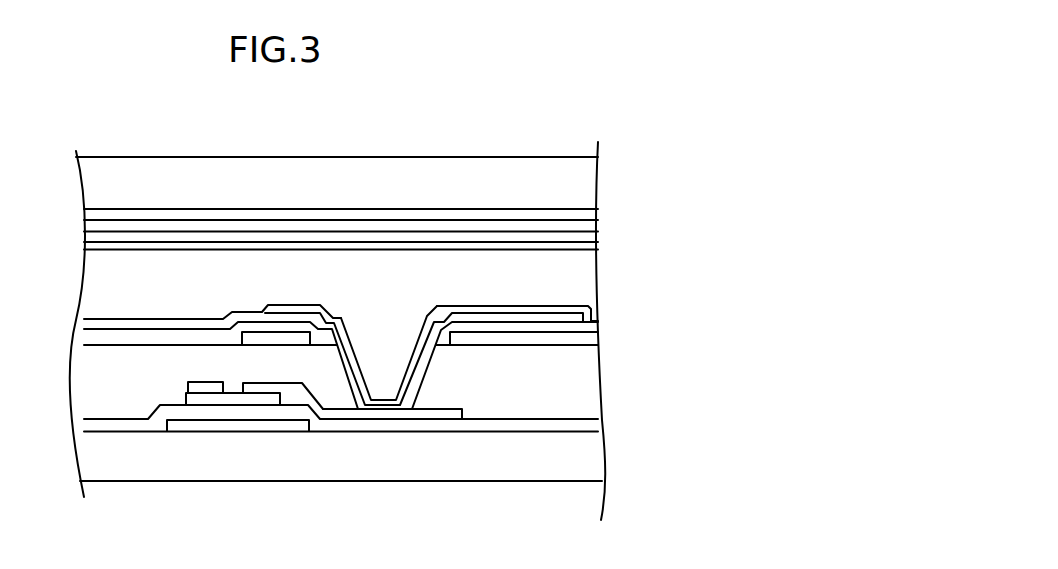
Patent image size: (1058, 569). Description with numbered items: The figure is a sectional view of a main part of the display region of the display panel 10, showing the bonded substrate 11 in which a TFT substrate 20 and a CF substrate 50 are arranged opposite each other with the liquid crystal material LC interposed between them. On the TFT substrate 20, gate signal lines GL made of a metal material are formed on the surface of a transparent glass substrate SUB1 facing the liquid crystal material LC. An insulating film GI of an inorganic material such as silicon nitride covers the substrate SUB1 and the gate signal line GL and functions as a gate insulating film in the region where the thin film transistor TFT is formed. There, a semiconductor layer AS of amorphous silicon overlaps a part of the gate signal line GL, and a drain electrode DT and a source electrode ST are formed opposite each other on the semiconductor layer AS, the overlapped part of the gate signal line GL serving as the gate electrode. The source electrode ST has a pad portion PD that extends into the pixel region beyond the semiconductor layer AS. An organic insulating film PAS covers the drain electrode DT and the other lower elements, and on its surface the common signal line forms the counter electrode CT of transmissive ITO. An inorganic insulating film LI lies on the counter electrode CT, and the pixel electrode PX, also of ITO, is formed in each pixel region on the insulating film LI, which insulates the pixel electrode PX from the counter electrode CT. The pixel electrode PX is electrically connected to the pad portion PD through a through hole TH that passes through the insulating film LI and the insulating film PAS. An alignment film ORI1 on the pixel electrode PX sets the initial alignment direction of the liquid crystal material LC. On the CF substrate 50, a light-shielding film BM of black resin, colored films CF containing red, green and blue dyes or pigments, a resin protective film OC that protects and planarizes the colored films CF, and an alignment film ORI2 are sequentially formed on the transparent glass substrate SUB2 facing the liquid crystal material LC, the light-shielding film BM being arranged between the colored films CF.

The display panel 10 is at (337, 271).
The bonded substrate 11 is at (750, 87).
The CF substrate 50 is at (700, 88).
The TFT substrate 20 is at (700, 228).
The substrate SUB2 is at (383, 140).
The light-shielding film BM is at (379, 169).
The colored films CF is at (376, 187).
The protective film OC is at (378, 205).
The alignment film ORI2 is at (388, 223).
The alignment film ORI1 is at (616, 254).
The liquid crystal material LC is at (107, 260).
The pixel electrode PX is at (382, 288).
The through hole TH is at (396, 332).
The insulating film LI is at (467, 344).
The insulating film PAS is at (383, 365).
The counter electrode CT is at (379, 331).
The pad portion PD is at (407, 380).
The thin film transistor TFT is at (207, 375).
The drain electrode DT is at (207, 387).
The source electrode ST is at (283, 378).
The semiconductor layer AS is at (192, 433).
The gate signal line GL is at (238, 444).
The insulating film GI is at (570, 423).
The substrate SUB1 is at (563, 460).